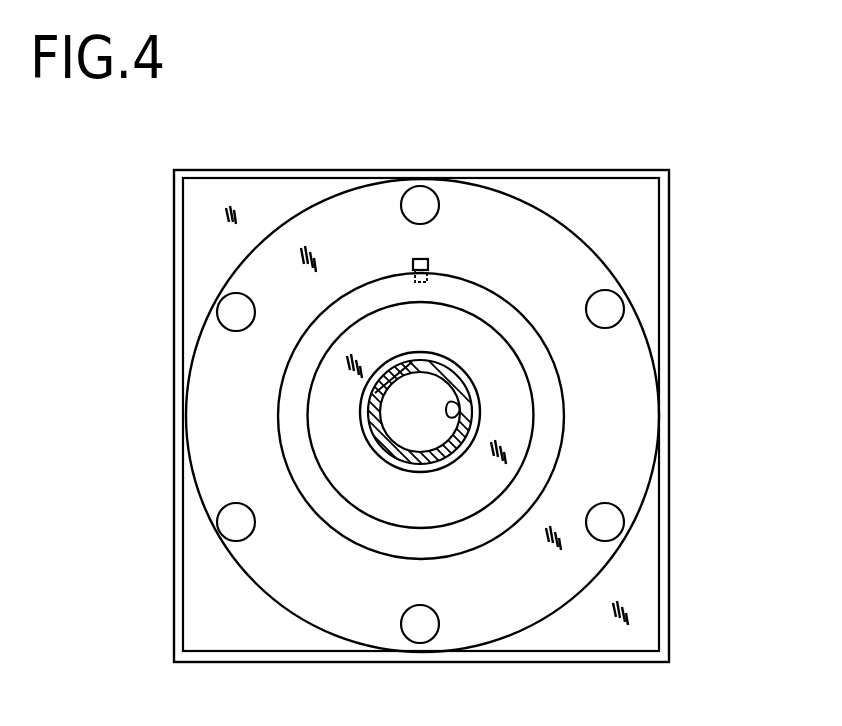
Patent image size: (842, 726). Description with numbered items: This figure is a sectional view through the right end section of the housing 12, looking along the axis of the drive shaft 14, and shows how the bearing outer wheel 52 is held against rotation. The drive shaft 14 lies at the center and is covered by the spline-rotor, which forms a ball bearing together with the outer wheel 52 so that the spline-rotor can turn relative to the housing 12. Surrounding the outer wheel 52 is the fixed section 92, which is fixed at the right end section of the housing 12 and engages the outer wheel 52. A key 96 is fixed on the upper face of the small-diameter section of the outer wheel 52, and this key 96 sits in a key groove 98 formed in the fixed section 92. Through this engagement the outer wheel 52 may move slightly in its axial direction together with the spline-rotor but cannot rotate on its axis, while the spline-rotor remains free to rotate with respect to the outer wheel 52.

The housing 12 is at (669, 553).
The drive shaft 14 is at (453, 417).
The outer wheel 52 is at (293, 449).
The fixed section 92 is at (210, 368).
The key 96 is at (428, 266).
The key groove 98 is at (410, 263).